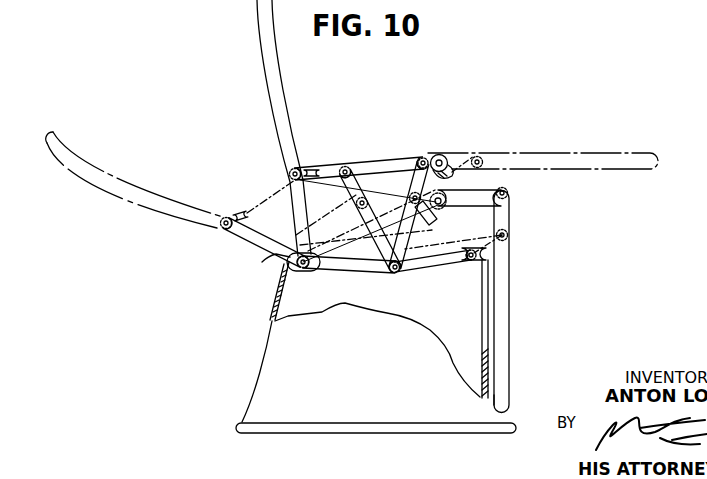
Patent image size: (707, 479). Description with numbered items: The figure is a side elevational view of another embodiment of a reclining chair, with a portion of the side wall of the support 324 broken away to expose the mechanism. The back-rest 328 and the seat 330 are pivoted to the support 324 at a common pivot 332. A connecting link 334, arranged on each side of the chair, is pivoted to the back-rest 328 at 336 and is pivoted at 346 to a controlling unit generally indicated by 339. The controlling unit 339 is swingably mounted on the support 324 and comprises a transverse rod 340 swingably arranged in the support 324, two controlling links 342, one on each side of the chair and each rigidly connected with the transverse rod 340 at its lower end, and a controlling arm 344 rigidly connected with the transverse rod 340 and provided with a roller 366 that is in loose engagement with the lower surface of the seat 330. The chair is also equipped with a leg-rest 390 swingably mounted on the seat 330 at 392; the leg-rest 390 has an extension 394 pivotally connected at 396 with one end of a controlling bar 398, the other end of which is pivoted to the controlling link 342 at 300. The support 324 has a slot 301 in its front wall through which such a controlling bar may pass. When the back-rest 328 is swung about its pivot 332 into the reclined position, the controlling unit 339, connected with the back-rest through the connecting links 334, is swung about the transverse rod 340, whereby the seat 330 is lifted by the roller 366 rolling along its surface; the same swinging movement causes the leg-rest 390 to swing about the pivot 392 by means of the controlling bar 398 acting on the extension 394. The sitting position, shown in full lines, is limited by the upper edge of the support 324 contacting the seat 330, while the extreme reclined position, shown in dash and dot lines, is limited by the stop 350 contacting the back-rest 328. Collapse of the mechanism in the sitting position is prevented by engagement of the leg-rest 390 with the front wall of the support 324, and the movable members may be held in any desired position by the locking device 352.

The back-rest 328 is at (283, 101).
The stop 350 is at (270, 260).
The pivot 336 is at (298, 169).
The locking device 352 is at (320, 173).
The connecting link 334 is at (368, 165).
The controlling link 342 is at (366, 250).
The pivot 346 is at (423, 160).
The transverse rod 340 is at (402, 270).
The seat 330 is at (344, 262).
The pivot 332 is at (306, 270).
The controlling arm 344 is at (445, 260).
The roller 366 is at (494, 258).
The slot 301 is at (485, 306).
The controlling bar 398 is at (472, 198).
The pivot 300 is at (430, 224).
The controlling unit 339 is at (441, 190).
The extension 394 is at (510, 212).
The pivot 396 is at (505, 196).
The pivot 392 is at (506, 235).
The leg-rest 390 is at (509, 318).
The support 324 is at (258, 348).